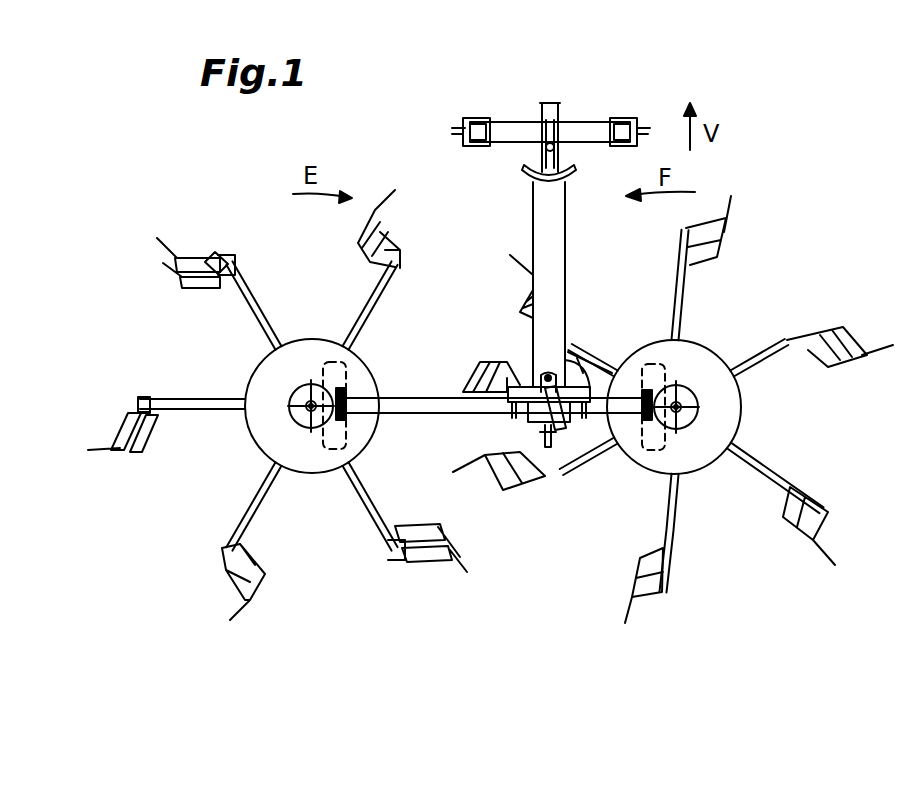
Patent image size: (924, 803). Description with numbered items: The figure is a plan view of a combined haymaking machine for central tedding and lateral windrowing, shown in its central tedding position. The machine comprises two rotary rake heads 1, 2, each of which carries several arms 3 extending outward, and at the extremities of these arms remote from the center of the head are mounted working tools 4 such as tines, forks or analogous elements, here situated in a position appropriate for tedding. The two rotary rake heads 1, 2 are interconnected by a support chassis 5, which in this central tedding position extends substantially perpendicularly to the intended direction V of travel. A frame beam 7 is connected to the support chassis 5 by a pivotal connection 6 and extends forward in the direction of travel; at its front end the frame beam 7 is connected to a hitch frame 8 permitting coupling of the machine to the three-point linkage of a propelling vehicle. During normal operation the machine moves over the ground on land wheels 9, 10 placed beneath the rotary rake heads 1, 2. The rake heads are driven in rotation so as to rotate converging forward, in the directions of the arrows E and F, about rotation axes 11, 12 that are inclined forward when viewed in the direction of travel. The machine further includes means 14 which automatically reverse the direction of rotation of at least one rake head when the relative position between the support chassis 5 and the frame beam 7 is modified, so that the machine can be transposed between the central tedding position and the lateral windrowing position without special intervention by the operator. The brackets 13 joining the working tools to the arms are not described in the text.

The rotary rake head 1 is at (264, 439).
The rotary rake head 2 is at (739, 421).
The arm 3 is at (180, 397).
The working tool 4 is at (170, 272).
The support chassis 5 is at (416, 415).
The pivotal connection 6 is at (522, 366).
The frame beam 7 is at (557, 262).
The hitch frame 8 is at (585, 122).
The land wheel 9 is at (340, 450).
The land wheel 10 is at (656, 452).
The rotation axis 11 is at (308, 410).
The rotation axis 12 is at (682, 410).
The bracket 13 is at (213, 255).
The means for reversing direction of rotation 14 is at (534, 433).